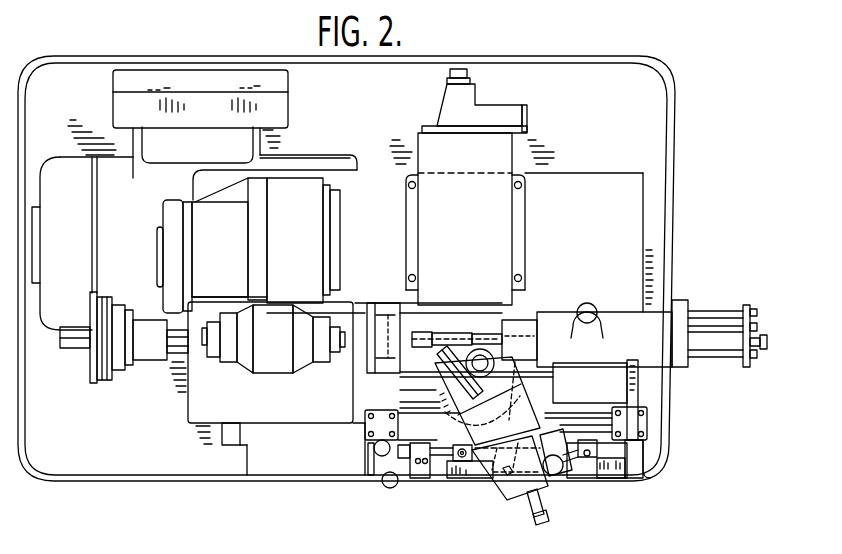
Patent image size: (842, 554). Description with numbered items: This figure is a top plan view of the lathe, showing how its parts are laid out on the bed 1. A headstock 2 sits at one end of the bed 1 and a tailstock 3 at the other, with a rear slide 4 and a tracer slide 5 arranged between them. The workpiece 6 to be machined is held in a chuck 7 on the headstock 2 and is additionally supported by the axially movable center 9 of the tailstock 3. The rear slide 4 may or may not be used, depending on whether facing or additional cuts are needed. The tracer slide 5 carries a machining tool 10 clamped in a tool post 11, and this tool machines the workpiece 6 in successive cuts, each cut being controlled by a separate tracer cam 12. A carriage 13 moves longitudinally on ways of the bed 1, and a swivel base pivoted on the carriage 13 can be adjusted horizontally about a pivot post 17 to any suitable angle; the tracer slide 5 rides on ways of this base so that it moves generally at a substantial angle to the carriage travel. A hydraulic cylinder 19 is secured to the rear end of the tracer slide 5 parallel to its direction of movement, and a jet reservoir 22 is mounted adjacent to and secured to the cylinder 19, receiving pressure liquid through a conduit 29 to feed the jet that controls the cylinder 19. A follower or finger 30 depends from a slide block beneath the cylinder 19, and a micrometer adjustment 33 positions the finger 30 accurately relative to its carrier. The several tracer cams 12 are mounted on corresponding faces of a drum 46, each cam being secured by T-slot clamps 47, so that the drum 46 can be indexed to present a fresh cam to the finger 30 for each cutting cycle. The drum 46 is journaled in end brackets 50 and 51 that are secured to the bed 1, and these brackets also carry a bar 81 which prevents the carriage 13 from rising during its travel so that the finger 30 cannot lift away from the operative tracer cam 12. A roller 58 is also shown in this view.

The bed 1 is at (645, 232).
The headstock 2 is at (345, 311).
The tailstock 3 is at (558, 327).
The rear slide 4 is at (418, 141).
The tracer slide 5 is at (532, 404).
The workpiece 6 is at (424, 332).
The chuck 7 is at (388, 302).
The axially movable center 9 is at (490, 333).
The machining tool 10 is at (440, 345).
The tool post 11 is at (486, 382).
The tracer cam 12 is at (488, 466).
The carriage 13 is at (448, 410).
The pivot post 17 is at (490, 392).
The hydraulic cylinder 19 is at (512, 488).
The jet reservoir 22 is at (567, 478).
The conduit 29 is at (560, 456).
The follower or finger 30 is at (507, 474).
The micrometer adjustment 33 is at (535, 521).
The drum 46 is at (388, 487).
The T-slot clamps 47 is at (453, 468).
The end bracket 50 is at (366, 430).
The end bracket 51 is at (650, 423).
The roller 58 is at (373, 454).
The bar 81 is at (584, 423).